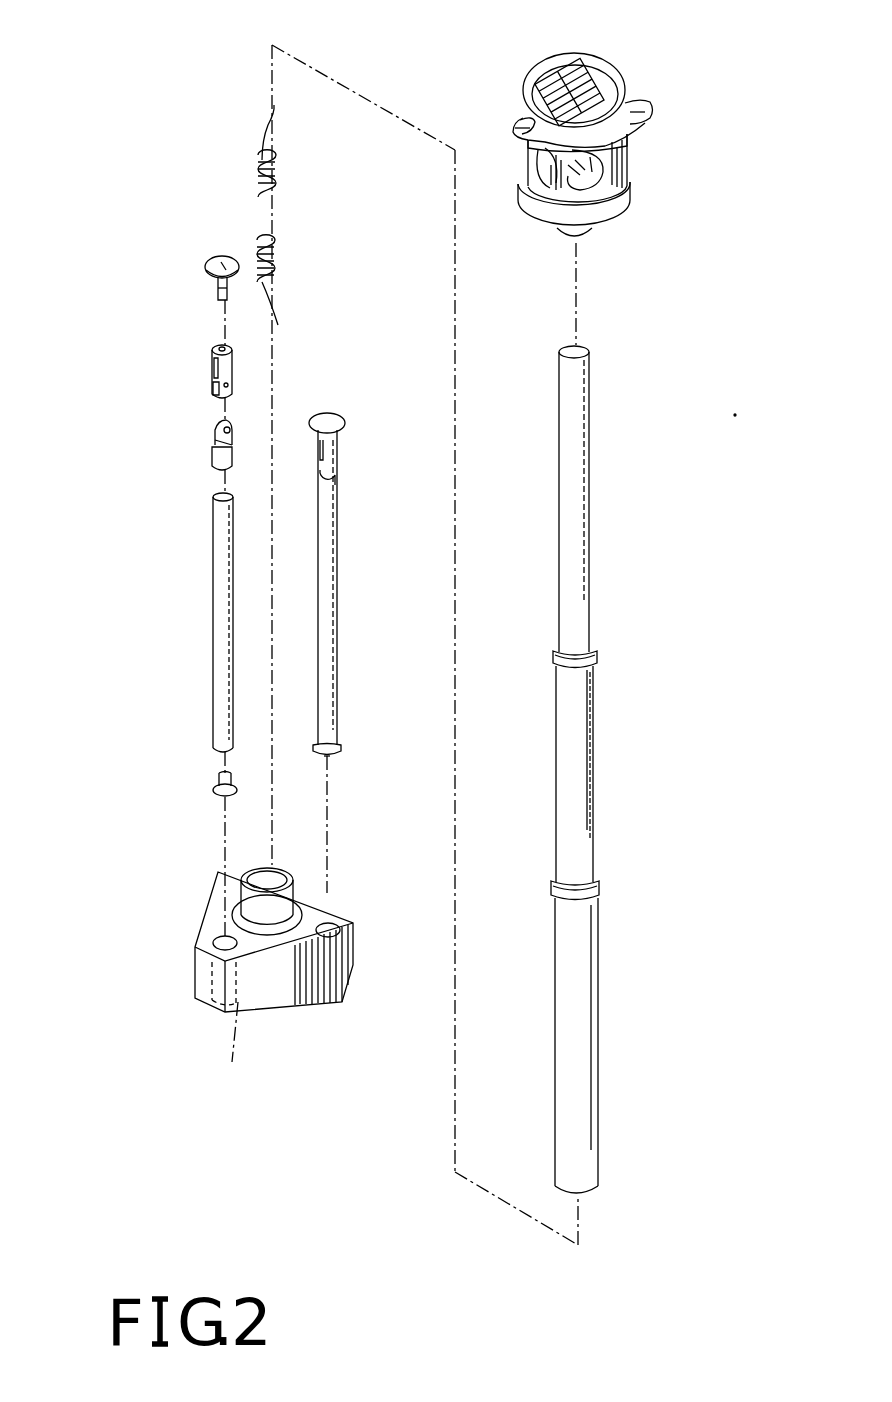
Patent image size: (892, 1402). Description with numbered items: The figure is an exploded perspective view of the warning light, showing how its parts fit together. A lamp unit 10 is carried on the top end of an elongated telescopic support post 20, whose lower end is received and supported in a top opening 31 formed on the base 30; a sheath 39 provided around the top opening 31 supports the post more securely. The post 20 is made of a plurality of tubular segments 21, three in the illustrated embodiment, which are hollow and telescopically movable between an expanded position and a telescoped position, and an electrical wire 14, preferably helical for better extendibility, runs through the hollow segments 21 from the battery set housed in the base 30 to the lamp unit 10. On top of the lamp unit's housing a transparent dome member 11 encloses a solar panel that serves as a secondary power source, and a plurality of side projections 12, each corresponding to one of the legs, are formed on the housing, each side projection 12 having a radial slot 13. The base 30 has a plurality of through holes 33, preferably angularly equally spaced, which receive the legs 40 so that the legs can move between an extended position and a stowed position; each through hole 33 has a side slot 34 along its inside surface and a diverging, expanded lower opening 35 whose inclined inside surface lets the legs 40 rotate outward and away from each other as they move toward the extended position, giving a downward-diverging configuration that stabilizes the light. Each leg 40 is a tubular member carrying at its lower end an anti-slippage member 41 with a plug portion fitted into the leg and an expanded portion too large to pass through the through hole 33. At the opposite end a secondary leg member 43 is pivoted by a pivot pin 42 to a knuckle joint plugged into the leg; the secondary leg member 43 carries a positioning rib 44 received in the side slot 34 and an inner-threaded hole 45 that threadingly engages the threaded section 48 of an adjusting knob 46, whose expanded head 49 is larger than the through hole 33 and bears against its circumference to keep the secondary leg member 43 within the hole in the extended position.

The lamp unit 10 is at (628, 170).
The transparent dome member 11 is at (600, 72).
The side projection 12 is at (645, 100).
The radial slot 13 is at (652, 124).
The electrical wire 14 is at (258, 160).
The telescopic support post 20 is at (597, 540).
The tubular segment 21 is at (590, 622).
The base 30 is at (320, 1005).
The top opening 31 is at (272, 876).
The through hole 33 is at (226, 936).
The side slot 34 is at (212, 943).
The expanded lower opening 35 is at (230, 1028).
The sheath 39 is at (286, 912).
The leg 40 is at (217, 602).
The anti-slippage member 41 is at (216, 786).
The pivot pin 42 is at (334, 474).
The secondary leg member 43 is at (212, 380).
The positioning rib 44 is at (214, 368).
The inner-threaded hole 45 is at (219, 349).
The adjusting knob 46 is at (214, 262).
The threaded section 48 is at (228, 293).
The expanded head 49 is at (223, 270).